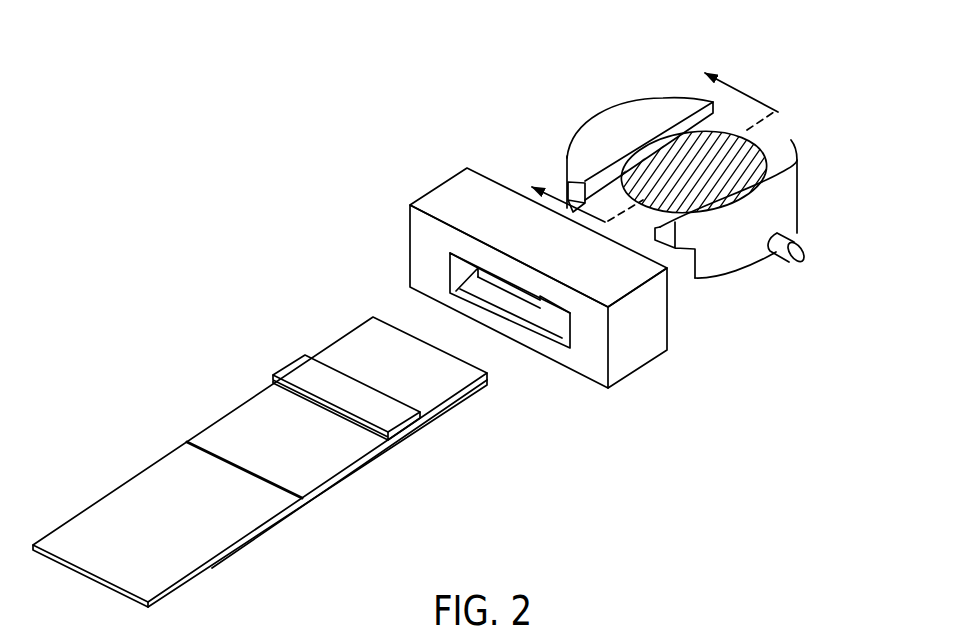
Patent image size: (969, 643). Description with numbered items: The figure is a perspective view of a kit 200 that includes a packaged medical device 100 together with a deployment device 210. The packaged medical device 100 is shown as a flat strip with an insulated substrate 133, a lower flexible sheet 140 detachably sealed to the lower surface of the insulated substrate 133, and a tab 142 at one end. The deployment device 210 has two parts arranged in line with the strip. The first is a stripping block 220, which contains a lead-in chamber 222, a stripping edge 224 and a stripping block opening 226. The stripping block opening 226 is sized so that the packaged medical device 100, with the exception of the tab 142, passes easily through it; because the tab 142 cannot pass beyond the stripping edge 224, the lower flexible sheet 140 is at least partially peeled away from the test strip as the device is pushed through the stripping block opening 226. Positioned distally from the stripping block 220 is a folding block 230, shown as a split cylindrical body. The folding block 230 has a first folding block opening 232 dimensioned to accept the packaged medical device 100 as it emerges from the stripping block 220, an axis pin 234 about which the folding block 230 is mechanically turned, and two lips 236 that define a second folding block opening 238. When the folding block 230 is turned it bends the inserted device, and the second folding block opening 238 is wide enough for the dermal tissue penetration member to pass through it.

The packaged medical device 100 is at (260, 462).
The insulated substrate 133 is at (132, 502).
The lower flexible sheet 140 is at (252, 427).
The tab 142 is at (297, 373).
The kit 200 is at (321, 156).
The deployment device 210 is at (827, 41).
The stripping block 220 is at (532, 297).
The lead-in chamber 222 is at (553, 331).
The stripping edge 224 is at (490, 288).
The stripping block opening 226 is at (460, 268).
The folding block 230 is at (738, 277).
The first folding block opening 232 is at (682, 258).
The axis pin 234 is at (801, 253).
The lips 236 is at (653, 147).
The second folding block opening 238 is at (767, 137).